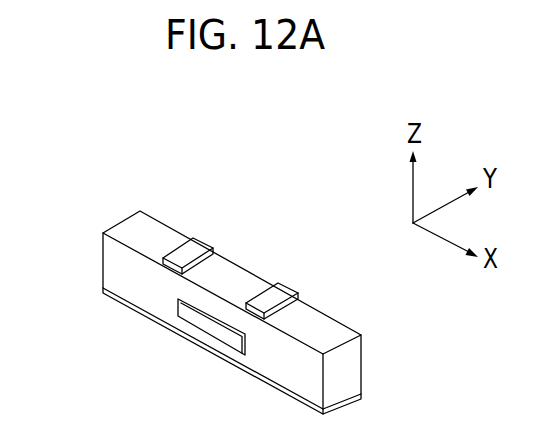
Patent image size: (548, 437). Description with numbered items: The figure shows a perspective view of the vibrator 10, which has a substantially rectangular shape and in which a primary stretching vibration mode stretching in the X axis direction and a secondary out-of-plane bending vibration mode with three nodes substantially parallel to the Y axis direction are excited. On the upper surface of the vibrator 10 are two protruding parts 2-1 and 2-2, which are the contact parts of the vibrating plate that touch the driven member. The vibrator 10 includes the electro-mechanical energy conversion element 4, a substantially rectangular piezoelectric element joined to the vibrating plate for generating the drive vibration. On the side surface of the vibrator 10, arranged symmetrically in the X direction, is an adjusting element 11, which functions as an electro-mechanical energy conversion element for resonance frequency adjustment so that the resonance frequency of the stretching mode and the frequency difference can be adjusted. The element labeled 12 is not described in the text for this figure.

The vibrator 10 is at (109, 133).
The case 12 is at (113, 267).
The adjusting element 11 is at (208, 320).
The electro-mechanical energy conversion element 4 is at (250, 376).
The protruding part 2-1 is at (202, 247).
The protruding part 2-2 is at (283, 293).